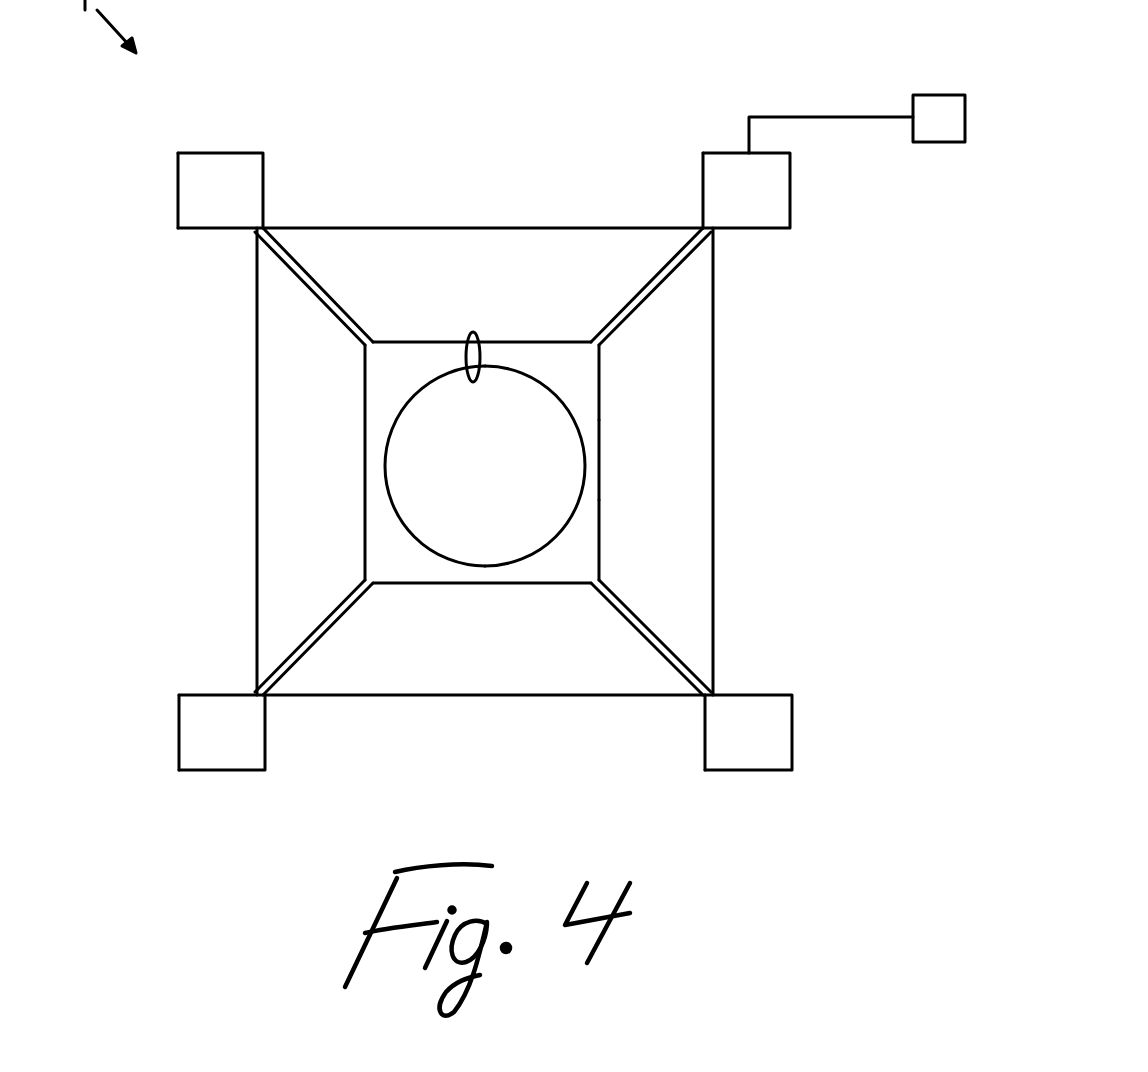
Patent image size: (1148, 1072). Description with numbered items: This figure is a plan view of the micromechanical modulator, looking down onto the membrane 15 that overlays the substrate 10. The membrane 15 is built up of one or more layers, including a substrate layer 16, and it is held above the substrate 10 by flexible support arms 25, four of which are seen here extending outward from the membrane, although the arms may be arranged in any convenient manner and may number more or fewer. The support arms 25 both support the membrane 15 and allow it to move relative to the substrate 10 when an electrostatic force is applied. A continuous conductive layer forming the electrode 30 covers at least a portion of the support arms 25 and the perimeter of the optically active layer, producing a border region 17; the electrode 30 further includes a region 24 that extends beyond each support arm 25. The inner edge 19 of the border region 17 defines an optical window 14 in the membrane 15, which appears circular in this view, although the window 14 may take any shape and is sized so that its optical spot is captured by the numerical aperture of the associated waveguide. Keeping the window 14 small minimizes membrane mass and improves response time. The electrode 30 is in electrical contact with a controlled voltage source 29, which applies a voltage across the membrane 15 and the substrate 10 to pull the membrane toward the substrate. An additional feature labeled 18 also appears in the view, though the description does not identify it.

The substrate 10 is at (716, 562).
The optical window 14 is at (413, 448).
The membrane 15 is at (585, 392).
The substrate layer 16 is at (460, 673).
The border region 17 is at (473, 331).
The inner frame region 18 is at (603, 446).
The inner edge 19 is at (582, 443).
The region 24 is at (220, 152).
The support arms 25 is at (320, 287).
The controlled voltage source 29 is at (940, 95).
The electrode 30 is at (196, 186).